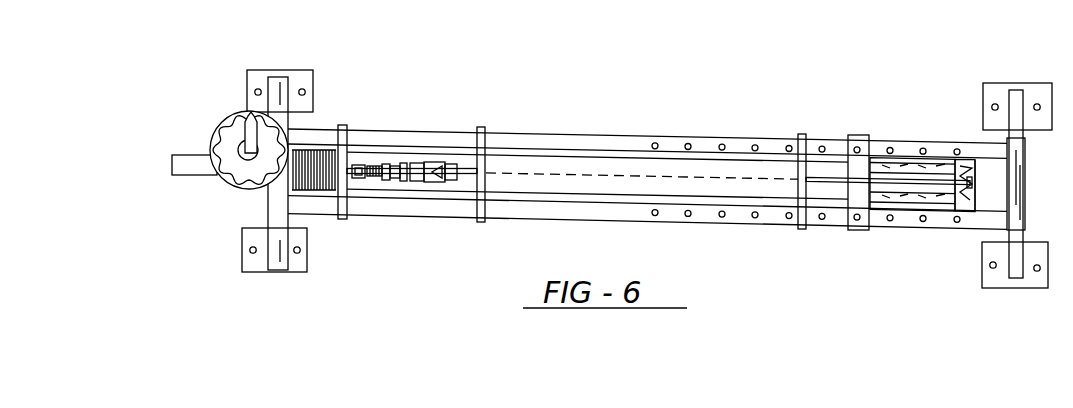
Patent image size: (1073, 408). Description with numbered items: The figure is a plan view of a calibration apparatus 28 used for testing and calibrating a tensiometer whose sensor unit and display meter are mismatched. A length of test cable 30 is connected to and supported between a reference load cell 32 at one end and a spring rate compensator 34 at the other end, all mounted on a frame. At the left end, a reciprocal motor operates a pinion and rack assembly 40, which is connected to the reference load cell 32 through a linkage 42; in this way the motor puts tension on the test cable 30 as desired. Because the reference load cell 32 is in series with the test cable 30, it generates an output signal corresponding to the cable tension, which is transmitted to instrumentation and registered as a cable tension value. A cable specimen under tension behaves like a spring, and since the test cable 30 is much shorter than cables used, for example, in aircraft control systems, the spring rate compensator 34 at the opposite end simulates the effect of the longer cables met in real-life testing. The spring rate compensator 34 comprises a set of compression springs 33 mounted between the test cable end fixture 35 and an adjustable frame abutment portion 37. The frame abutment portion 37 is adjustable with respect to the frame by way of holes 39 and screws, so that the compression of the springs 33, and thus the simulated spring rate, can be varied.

The calibration apparatus 28 is at (208, 117).
The test cable 30 is at (948, 188).
The reference load cell 32 is at (395, 171).
The compression springs 33 is at (910, 167).
The spring rate compensator 34 is at (920, 141).
The fixture 35 is at (967, 208).
The frame abutment portion 37 is at (858, 165).
The holes 39 is at (855, 221).
The pinion and rack assembly 40 is at (318, 122).
The linkage 42 is at (348, 171).